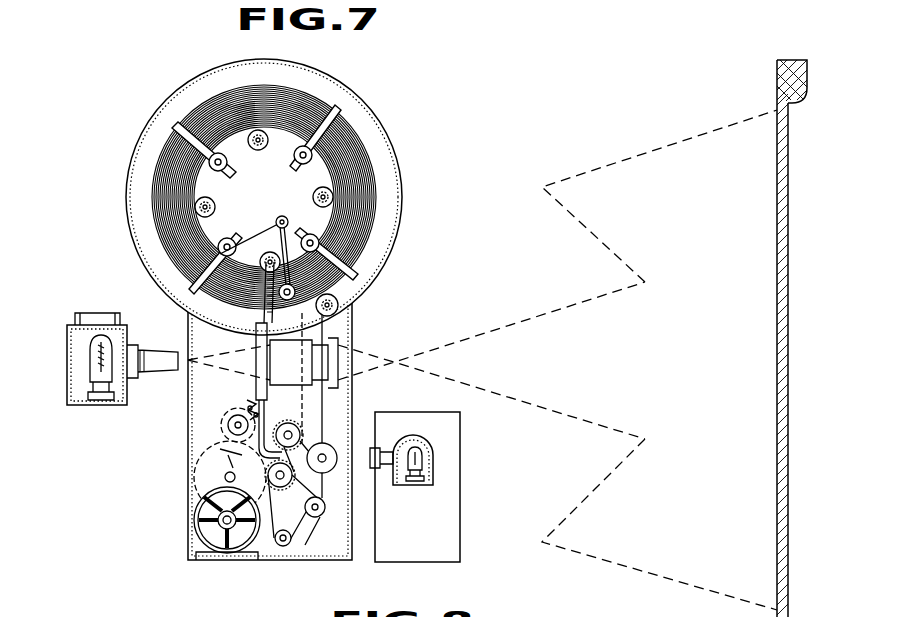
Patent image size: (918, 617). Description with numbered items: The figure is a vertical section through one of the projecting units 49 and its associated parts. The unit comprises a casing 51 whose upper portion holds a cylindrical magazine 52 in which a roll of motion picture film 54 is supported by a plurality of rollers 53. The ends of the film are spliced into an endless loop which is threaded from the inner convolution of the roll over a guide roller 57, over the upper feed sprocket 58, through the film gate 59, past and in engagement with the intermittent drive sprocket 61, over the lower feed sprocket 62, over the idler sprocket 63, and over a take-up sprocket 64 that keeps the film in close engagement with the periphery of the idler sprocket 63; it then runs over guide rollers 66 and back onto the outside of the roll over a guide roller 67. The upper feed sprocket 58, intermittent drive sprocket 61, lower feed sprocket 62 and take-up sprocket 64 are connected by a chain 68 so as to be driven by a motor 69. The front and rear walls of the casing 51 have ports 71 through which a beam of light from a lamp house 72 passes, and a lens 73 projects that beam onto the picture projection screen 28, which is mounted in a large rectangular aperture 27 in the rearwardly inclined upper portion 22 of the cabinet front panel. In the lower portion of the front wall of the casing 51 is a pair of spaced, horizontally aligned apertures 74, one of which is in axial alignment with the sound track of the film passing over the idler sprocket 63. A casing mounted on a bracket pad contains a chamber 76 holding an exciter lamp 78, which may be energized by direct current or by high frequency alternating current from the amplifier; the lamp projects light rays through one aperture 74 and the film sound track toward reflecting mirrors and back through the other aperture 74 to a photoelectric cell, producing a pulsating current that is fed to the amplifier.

The upper portion of front panel 22 is at (777, 70).
The rectangular aperture 27 is at (796, 172).
The picture projection screen 28 is at (777, 407).
The projecting unit 49 is at (178, 488).
The casing 51 is at (188, 444).
The cylindrical magazine 52 is at (401, 137).
The rollers 53 is at (214, 204).
The roll of motion picture film 54 is at (316, 102).
The guide roller 57 is at (283, 216).
The upper feed sprocket 58 is at (258, 318).
The film gate 59 is at (256, 340).
The intermittent drive sprocket 61 is at (247, 405).
The lower feed sprocket 62 is at (289, 421).
The idler sprocket 63 is at (327, 444).
The take-up sprocket 64 is at (295, 502).
The guide rollers 66 is at (291, 538).
The guide roller 67 is at (340, 306).
The chain 68 is at (233, 458).
The motor 69 is at (195, 520).
The ports 71 is at (185, 370).
The lamp house 72 is at (97, 405).
The lens 73 is at (335, 352).
The apertures 74 is at (353, 458).
The chamber 76 is at (424, 461).
The exciter lamp 78 is at (418, 450).